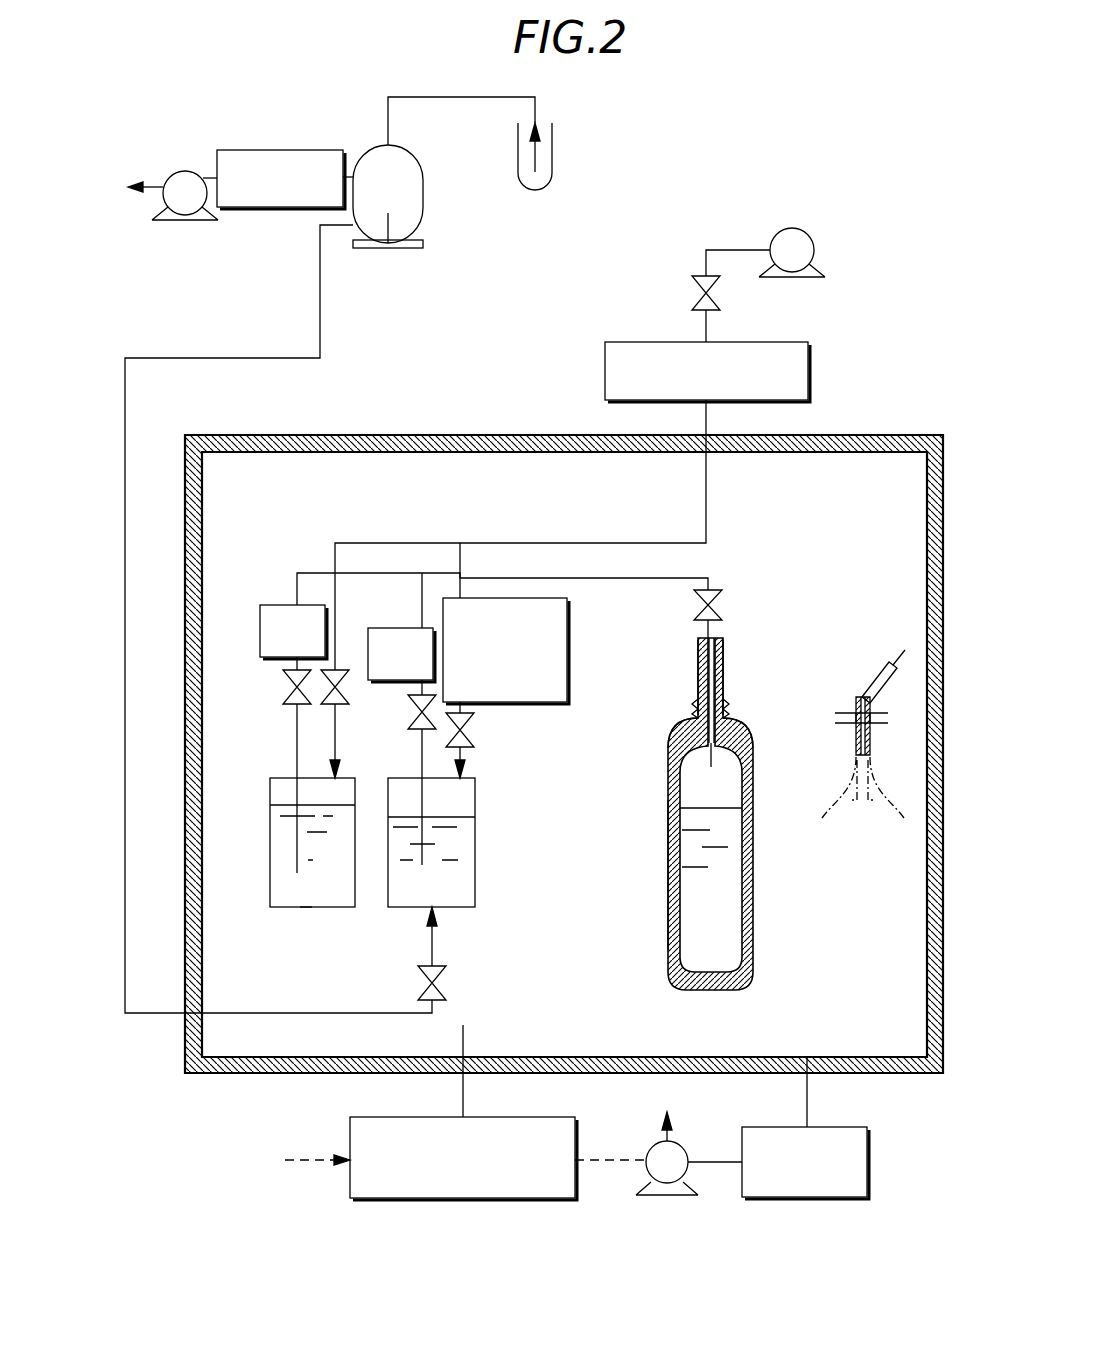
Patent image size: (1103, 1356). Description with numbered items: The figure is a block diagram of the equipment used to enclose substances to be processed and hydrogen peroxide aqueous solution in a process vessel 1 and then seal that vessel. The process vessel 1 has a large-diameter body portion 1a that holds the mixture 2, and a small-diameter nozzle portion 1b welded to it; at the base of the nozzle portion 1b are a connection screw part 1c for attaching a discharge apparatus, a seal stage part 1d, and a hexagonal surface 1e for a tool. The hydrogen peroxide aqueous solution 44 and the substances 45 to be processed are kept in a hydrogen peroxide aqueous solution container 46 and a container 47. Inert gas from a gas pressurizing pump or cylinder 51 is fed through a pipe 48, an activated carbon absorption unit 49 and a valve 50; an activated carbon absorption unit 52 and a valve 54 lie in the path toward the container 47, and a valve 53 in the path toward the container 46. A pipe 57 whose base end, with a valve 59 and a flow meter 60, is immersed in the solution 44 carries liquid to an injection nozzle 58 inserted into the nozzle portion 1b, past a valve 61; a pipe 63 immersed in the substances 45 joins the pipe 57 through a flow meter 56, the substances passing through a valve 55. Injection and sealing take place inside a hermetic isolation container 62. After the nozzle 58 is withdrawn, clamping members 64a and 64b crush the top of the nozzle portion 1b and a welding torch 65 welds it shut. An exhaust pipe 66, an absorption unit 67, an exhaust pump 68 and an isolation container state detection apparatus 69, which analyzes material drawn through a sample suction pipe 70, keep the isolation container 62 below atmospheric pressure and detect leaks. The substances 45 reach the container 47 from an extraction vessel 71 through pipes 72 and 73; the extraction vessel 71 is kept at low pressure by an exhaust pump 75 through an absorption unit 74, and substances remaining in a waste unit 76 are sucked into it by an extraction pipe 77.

The process vessel 1 is at (760, 968).
The body portion 1a is at (666, 862).
The nozzle portion 1b is at (726, 648).
The connection screw part 1c is at (726, 716).
The seal stage part 1d is at (726, 698).
The hexagonal surface 1e is at (690, 720).
The mixture 2 is at (728, 890).
The hydrogen peroxide aqueous solution 44 is at (282, 857).
The substances to be processed 45 is at (447, 893).
The hydrogen peroxide aqueous solution container 46 is at (308, 908).
The container 47 is at (478, 835).
The pipe 48 is at (540, 543).
The activated carbon absorption unit 49 is at (810, 365).
The valve 50 is at (692, 293).
The gas pressurizing pump or cylinder 51 is at (792, 228).
The activated carbon absorption unit 52 is at (567, 668).
The valve 53 is at (476, 728).
The valve 54 is at (350, 690).
The valve 55 is at (405, 714).
The flow meter 56 is at (368, 642).
The pipe 57 is at (600, 578).
The injection nozzle 58 is at (709, 763).
The valve 59 is at (283, 678).
The flow meter 60 is at (258, 610).
The valve 61 is at (724, 597).
The isolation container 62 is at (433, 435).
The pipe 63 is at (420, 760).
The clamping member 64a is at (840, 725).
The clamping member 64b is at (889, 725).
The welding torch 65 is at (905, 650).
The exhaust pipe 66 is at (810, 1097).
The absorption unit 67 is at (870, 1180).
The exhaust pump 68 is at (684, 1150).
The isolation container state detection apparatus 69 is at (350, 1130).
The sample suction pipe 70 is at (466, 1093).
The extraction vessel 71 is at (423, 190).
The pipe 72 is at (168, 358).
The pipe 73 is at (446, 975).
The absorption unit 74 is at (283, 150).
The exhaust pump 75 is at (185, 171).
The waste unit 76 is at (552, 155).
The extraction pipe 77 is at (465, 100).